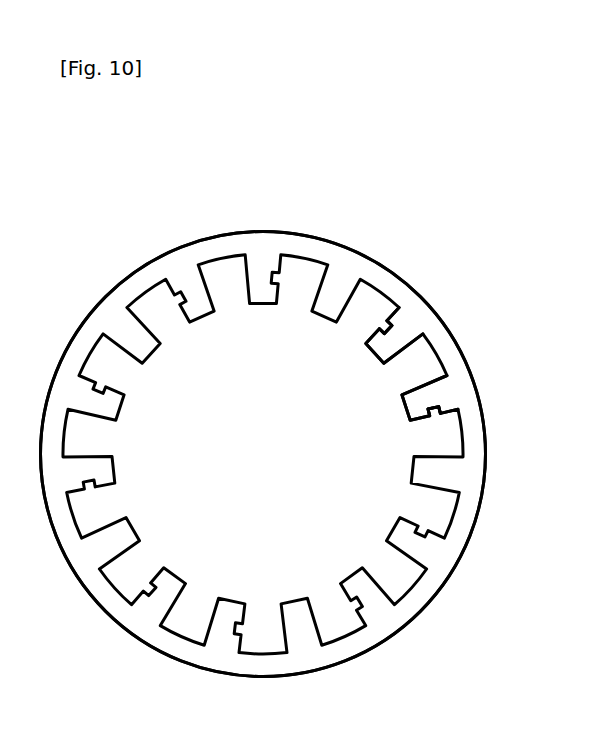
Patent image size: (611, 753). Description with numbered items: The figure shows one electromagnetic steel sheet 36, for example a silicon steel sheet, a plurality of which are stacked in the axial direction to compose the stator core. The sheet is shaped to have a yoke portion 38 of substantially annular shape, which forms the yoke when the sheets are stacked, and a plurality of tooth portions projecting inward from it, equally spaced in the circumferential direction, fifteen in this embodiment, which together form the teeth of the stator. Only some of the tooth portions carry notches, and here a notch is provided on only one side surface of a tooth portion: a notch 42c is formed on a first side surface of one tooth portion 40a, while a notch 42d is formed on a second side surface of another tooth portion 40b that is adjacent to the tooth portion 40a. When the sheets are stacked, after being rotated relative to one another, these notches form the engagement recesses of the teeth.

The electromagnetic steel sheet 36 is at (281, 162).
The yoke portion 38 is at (307, 250).
The tooth portion 40a is at (412, 413).
The tooth portion 40b is at (371, 356).
The notch 42c is at (440, 412).
The notch 42d is at (384, 328).